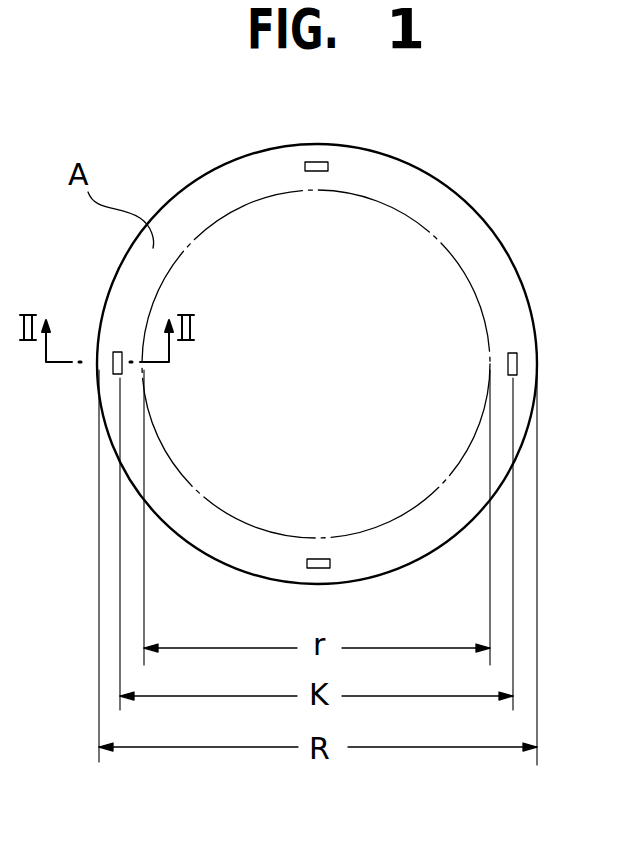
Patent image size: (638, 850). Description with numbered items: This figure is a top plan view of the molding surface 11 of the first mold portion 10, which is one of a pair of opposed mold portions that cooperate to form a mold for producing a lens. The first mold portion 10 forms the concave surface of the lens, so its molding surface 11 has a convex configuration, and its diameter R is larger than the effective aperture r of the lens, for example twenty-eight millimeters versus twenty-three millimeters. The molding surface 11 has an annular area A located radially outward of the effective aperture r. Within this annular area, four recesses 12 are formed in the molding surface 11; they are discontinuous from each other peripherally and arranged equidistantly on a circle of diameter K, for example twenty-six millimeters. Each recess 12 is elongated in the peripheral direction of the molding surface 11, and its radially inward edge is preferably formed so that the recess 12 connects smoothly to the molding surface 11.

The first mold portion 10 is at (466, 197).
The molding surface 11 is at (493, 265).
The recesses 12 is at (317, 162).